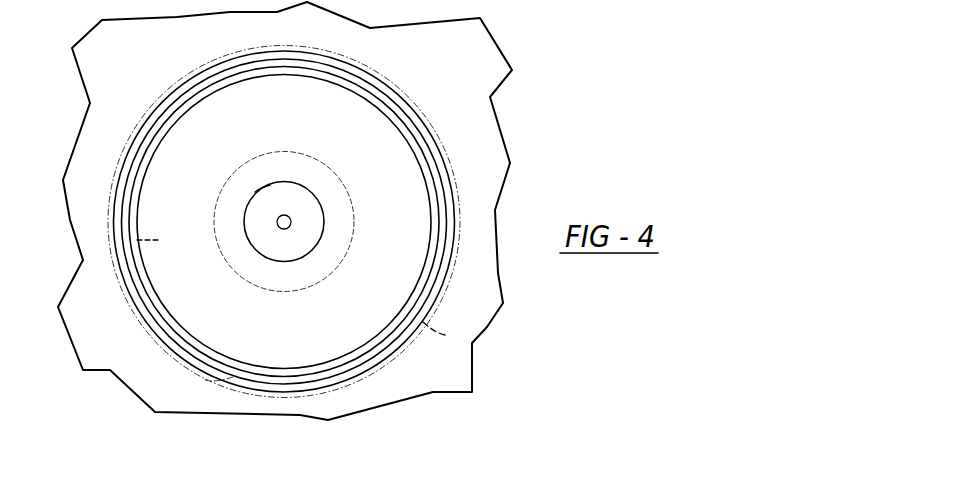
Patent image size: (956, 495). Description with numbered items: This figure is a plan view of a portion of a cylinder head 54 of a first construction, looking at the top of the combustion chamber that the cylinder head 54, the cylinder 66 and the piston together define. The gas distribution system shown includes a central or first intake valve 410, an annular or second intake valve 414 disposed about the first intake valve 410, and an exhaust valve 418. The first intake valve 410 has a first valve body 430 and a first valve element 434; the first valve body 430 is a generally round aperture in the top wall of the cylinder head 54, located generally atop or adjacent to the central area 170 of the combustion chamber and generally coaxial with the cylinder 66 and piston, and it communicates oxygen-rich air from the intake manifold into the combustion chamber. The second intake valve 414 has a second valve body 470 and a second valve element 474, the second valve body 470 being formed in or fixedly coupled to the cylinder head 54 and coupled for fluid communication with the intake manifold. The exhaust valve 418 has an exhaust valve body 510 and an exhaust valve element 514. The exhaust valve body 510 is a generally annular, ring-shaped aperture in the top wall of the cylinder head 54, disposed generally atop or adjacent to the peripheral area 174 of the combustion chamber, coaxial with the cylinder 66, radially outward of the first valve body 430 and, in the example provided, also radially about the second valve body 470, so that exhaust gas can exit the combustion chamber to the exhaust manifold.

The cylinder head 54 is at (457, 78).
The cylinder 66 is at (445, 335).
The central area 170 is at (231, 233).
The peripheral area 174 is at (137, 240).
The first intake valve 410 is at (290, 180).
The second intake valve 414 is at (378, 107).
The exhaust valve 418 is at (428, 142).
The first valve body 430 is at (265, 183).
The first valve element 434 is at (256, 207).
The second valve body 470 is at (424, 262).
The second valve element 474 is at (408, 312).
The exhaust valve body 510 is at (200, 362).
The exhaust valve element 514 is at (223, 380).